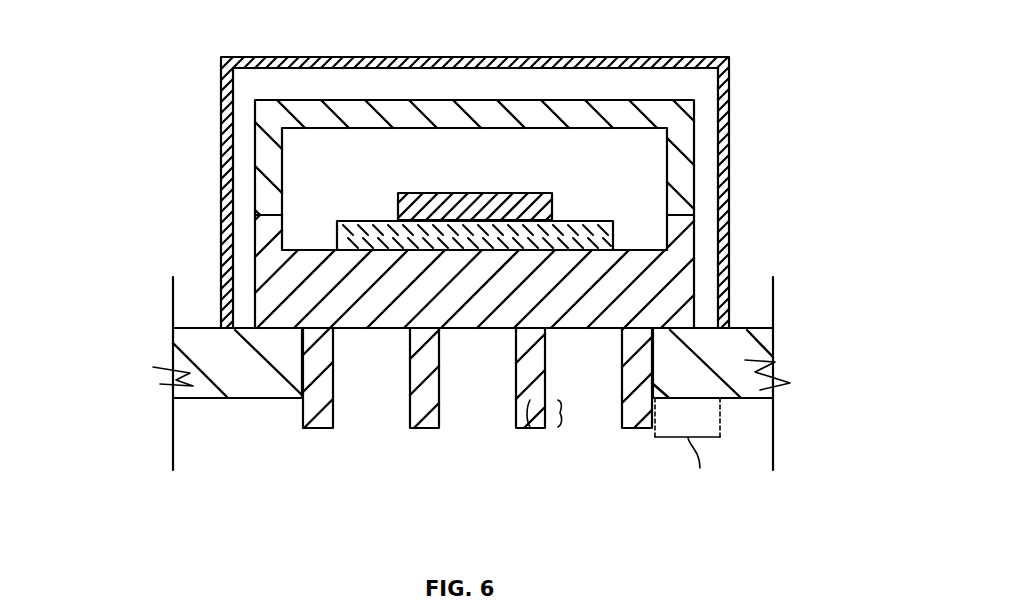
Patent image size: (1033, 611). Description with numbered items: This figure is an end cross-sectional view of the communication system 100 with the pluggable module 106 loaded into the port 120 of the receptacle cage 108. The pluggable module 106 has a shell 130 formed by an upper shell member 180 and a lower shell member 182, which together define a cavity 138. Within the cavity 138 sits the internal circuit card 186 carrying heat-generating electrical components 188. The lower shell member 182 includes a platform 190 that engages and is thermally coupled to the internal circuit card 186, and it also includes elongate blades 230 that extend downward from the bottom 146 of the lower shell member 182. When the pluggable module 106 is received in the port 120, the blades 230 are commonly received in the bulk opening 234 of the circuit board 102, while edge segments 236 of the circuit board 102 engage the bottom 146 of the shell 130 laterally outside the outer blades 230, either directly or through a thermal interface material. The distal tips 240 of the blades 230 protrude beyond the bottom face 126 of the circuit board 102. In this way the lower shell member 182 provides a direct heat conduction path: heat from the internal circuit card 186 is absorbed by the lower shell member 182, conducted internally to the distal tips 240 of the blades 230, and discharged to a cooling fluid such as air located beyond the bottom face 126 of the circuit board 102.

The communication system 100 is at (150, 42).
The circuit board 102 is at (213, 356).
The pluggable module 106 is at (298, 101).
The receptacle cage 108 is at (228, 57).
The port 120 is at (312, 85).
The bottom face 126 is at (212, 398).
The shell 130 is at (270, 260).
The cavity 138 is at (565, 148).
The bottom 146 is at (281, 330).
The upper shell member 180 is at (695, 128).
The lower shell member 182 is at (685, 257).
The internal circuit card 186 is at (597, 230).
The heat-generating electrical components 188 is at (550, 194).
The platform 190 is at (558, 272).
The blades 230 is at (317, 400).
The bulk opening 234 is at (297, 410).
The edge segments 236 is at (687, 447).
The distal tips 240 is at (561, 413).